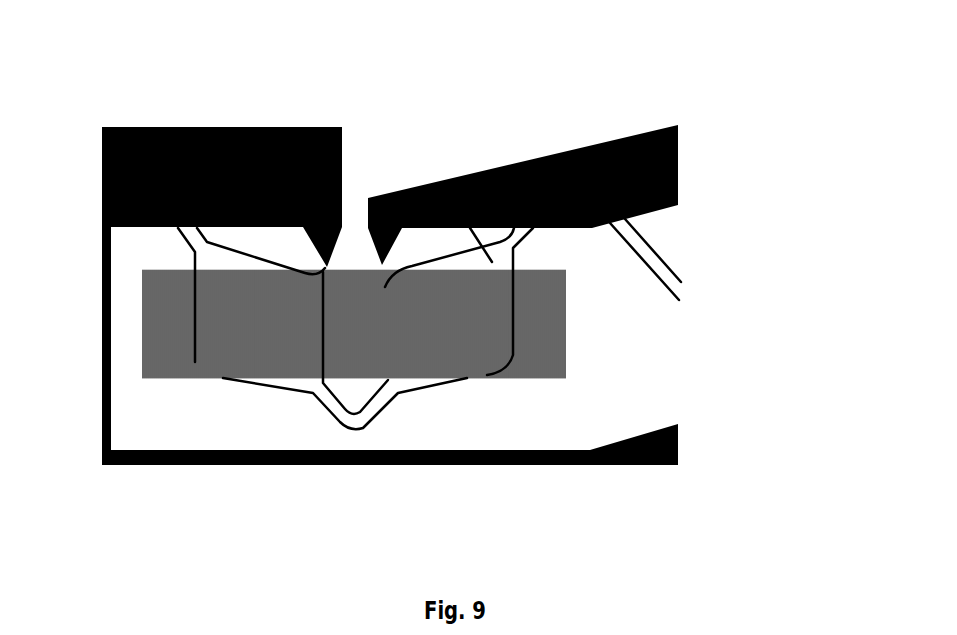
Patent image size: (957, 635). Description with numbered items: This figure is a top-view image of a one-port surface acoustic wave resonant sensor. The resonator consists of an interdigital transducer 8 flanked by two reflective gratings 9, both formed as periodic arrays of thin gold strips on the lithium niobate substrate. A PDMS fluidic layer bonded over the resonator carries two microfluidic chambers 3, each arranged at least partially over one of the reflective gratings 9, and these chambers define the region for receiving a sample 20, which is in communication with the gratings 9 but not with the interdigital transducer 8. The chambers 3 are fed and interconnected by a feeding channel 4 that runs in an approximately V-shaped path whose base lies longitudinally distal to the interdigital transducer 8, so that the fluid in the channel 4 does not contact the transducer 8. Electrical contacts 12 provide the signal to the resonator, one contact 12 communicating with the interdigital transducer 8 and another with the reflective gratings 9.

The microfluidic chamber 3 is at (277, 127).
The feeding channel 4 is at (102, 250).
The interdigital transducer 8 is at (352, 343).
The reflective grating 9 is at (248, 330).
The electrical contact 12 is at (482, 143).
The region for receiving a sample 20 is at (483, 327).